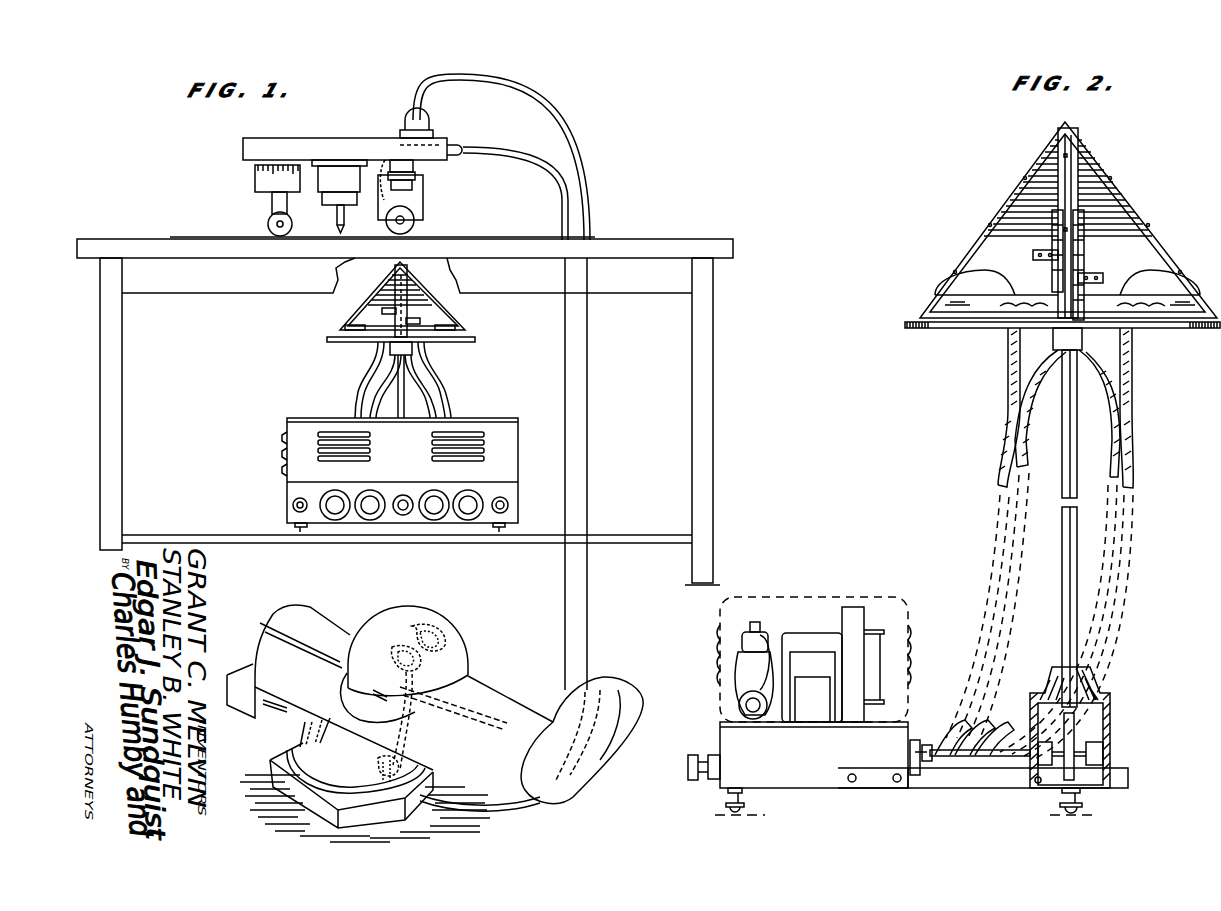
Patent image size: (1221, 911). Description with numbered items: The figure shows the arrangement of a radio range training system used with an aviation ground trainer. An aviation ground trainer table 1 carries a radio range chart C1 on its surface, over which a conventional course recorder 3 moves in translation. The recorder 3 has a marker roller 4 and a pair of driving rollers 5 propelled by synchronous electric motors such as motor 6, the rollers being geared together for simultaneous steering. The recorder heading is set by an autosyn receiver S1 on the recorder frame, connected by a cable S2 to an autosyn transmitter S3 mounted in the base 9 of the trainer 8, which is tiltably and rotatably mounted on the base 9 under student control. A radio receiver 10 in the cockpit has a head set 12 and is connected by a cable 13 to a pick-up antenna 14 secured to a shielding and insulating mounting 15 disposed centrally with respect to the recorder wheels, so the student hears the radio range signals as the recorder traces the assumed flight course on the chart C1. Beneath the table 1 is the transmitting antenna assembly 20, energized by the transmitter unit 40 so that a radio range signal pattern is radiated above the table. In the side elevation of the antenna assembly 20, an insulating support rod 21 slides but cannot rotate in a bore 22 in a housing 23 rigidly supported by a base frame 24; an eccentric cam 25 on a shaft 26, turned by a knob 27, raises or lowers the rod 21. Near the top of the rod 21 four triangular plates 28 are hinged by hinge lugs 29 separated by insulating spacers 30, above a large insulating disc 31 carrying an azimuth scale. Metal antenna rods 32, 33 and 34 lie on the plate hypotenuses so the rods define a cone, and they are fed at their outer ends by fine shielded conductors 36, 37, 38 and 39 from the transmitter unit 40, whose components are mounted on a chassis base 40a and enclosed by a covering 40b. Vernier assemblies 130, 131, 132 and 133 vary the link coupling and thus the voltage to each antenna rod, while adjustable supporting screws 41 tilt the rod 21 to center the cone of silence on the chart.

In FIG. 1, the aviation ground trainer table 1 is at (134, 250).
In FIG. 1, the radio range chart C1 is at (612, 242).
In FIG. 1, the course recorder 3 is at (326, 142).
In FIG. 1, the marker roller 4 is at (268, 222).
In FIG. 1, the driving rollers 5 is at (418, 228).
In FIG. 1, the synchronous electric motor 6 is at (428, 200).
In FIG. 1, the trainer 8 is at (330, 618).
In FIG. 1, the base 9 is at (278, 758).
In FIG. 1, the radio receiver 10 is at (392, 650).
In FIG. 1, the head set 12 is at (422, 627).
In FIG. 1, the cable 13 is at (565, 600).
In FIG. 1, the pick-up antenna 14 is at (345, 218).
In FIG. 1, the shielding and insulating mounting 15 is at (330, 198).
In FIG. 1, the transmitting antenna assembly 20 is at (408, 354).
In FIG. 2, the transmitting antenna assembly 20 is at (1062, 242).
In FIG. 1, the support rod 21 is at (402, 422).
In FIG. 2, the support rod 21 is at (1074, 450).
In FIG. 2, the bore 22 is at (1095, 678).
In FIG. 2, the housing 23 is at (1110, 715).
In FIG. 2, the base frame 24 is at (990, 782).
In FIG. 2, the cam 25 is at (1074, 735).
In FIG. 2, the shaft 26 is at (1100, 768).
In FIG. 1, the knob 27 is at (404, 516).
In FIG. 1, the triangular plates 28 is at (418, 300).
In FIG. 2, the triangular plates 28 is at (1118, 200).
In FIG. 1, the hinge lug 29 is at (386, 311).
In FIG. 2, the hinge lug 29 is at (1035, 262).
In FIG. 2, the spacers 30 is at (1060, 212).
In FIG. 1, the disc 31 is at (338, 342).
In FIG. 2, the disc 31 is at (932, 333).
In FIG. 1, the antenna rod 32 is at (354, 314).
In FIG. 2, the antenna rod 32 is at (1012, 190).
In FIG. 2, the antenna rod 33 is at (1150, 218).
In FIG. 2, the antenna rod 34 is at (1070, 185).
In FIG. 1, the antenna feed conductor 36 is at (360, 385).
In FIG. 2, the antenna feed conductor 36 is at (1010, 372).
In FIG. 1, the antenna feed conductor 37 is at (452, 410).
In FIG. 2, the antenna feed conductor 37 is at (1140, 398).
In FIG. 1, the antenna feed conductor 38 is at (372, 396).
In FIG. 2, the antenna feed conductor 38 is at (1015, 475).
In FIG. 1, the antenna feed conductor 39 is at (438, 392).
In FIG. 2, the antenna feed conductor 39 is at (1122, 478).
In FIG. 1, the transmitter unit 40 is at (424, 491).
In FIG. 2, the transmitter unit 40 is at (908, 691).
In FIG. 1, the chassis base 40a is at (522, 468).
In FIG. 2, the chassis base 40a is at (820, 773).
In FIG. 1, the covering 40b is at (520, 503).
In FIG. 2, the covering 40b is at (810, 600).
In FIG. 2, the adjustable supporting screws 41 is at (730, 812).
In FIG. 1, the vernier assembly 130 is at (333, 520).
In FIG. 1, the vernier assembly 131 is at (370, 489).
In FIG. 1, the vernier assembly 132 is at (434, 489).
In FIG. 1, the vernier assembly 133 is at (478, 480).
In FIG. 1, the autosyn receiver S1 is at (339, 182).
In FIG. 1, the cable S2 is at (518, 85).
In FIG. 1, the autosyn transmitter S3 is at (380, 770).